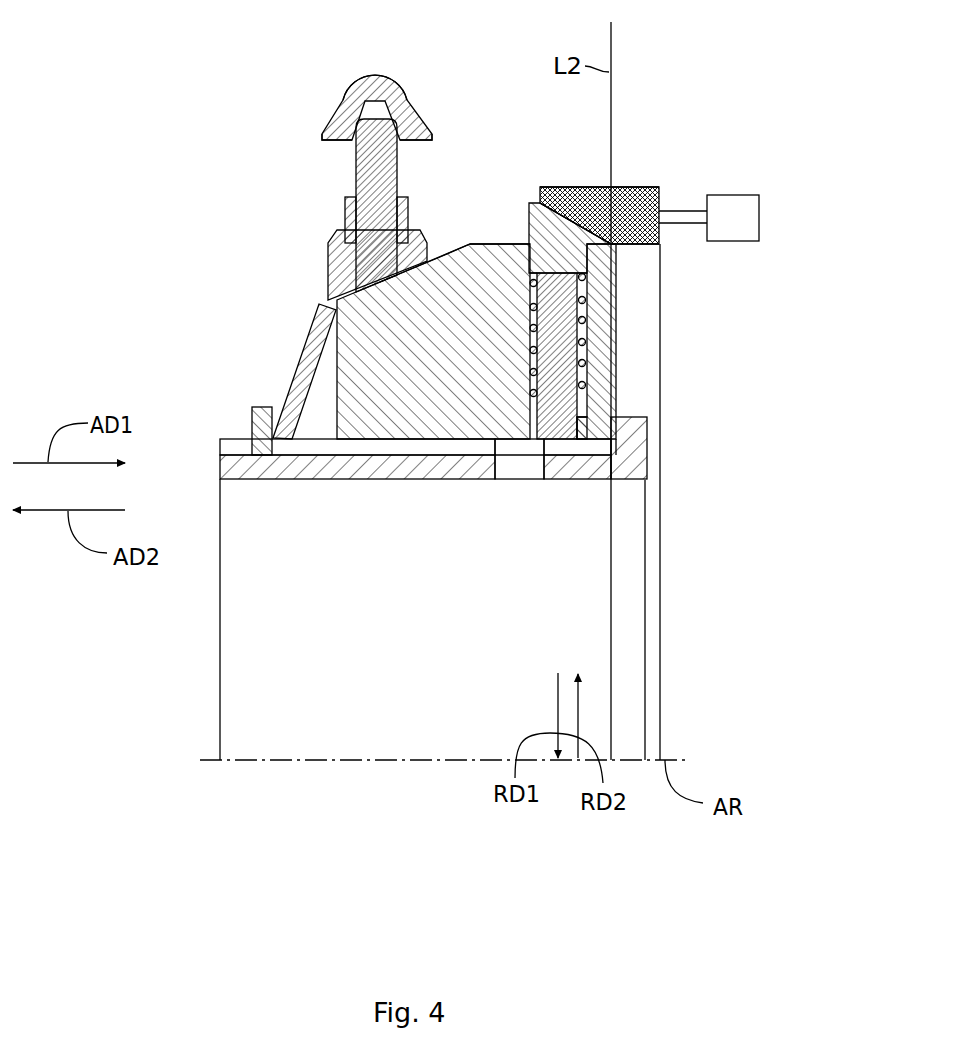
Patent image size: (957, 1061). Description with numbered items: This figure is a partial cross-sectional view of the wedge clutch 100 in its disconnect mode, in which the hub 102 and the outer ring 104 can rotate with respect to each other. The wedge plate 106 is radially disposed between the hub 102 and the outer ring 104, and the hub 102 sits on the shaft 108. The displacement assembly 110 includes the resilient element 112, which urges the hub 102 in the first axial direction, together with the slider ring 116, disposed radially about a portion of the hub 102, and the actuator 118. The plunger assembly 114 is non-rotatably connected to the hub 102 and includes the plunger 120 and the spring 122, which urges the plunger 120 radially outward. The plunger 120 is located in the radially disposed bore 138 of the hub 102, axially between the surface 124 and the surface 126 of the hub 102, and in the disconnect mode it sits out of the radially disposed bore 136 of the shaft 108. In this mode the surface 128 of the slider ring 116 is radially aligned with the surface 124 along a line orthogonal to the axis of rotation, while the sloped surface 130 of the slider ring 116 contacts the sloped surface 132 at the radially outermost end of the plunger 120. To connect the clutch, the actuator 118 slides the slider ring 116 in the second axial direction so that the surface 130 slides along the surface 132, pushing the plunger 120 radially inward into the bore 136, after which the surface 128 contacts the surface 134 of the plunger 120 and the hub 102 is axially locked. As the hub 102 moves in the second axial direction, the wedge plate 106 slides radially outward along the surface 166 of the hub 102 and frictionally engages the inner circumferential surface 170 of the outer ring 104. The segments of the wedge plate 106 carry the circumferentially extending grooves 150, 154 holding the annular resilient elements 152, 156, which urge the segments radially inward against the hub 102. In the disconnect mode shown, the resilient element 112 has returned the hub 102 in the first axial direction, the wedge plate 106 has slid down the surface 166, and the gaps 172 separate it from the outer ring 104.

The wedge clutch 100 is at (631, 72).
The hub 102 is at (488, 240).
The outer ring 104 is at (375, 74).
The wedge plate 106 is at (339, 209).
The shaft 108 is at (292, 484).
The displacement assembly 110 is at (654, 118).
The resilient element 112 is at (302, 357).
The plunger assembly 114 is at (598, 358).
The slider ring 116 is at (555, 183).
The actuator 118 is at (731, 195).
The plunger 120 is at (582, 407).
The spring 122 is at (588, 322).
The surface of hub 124 is at (636, 187).
The surface of hub 126 is at (518, 243).
The surface of slider ring 128 is at (640, 246).
The surface of slider ring 130 is at (577, 186).
The surface of plunger 132 is at (560, 213).
The surface of plunger 134 is at (537, 198).
The bore of shaft 136 is at (518, 478).
The bore of hub 138 is at (582, 420).
The circumferentially extending groove 150 is at (413, 262).
The annular resilient element 152 is at (410, 222).
The circumferentially extending groove 154 is at (327, 261).
The annular resilient element 156 is at (345, 222).
The surface of hub 166 is at (455, 250).
The inner circumferential surface of ring 170 is at (345, 100).
The gaps 172 is at (340, 112).